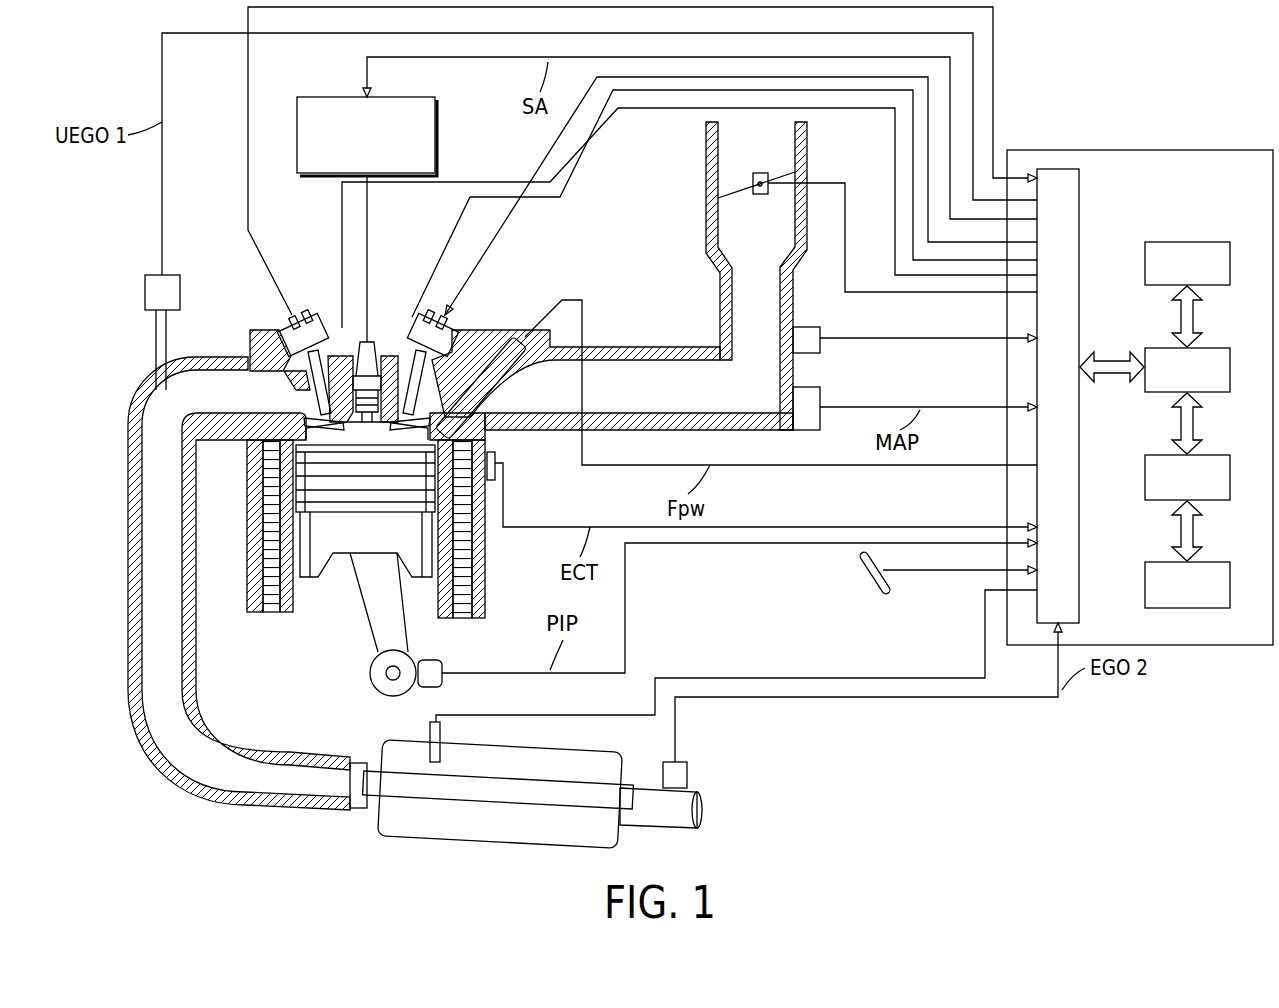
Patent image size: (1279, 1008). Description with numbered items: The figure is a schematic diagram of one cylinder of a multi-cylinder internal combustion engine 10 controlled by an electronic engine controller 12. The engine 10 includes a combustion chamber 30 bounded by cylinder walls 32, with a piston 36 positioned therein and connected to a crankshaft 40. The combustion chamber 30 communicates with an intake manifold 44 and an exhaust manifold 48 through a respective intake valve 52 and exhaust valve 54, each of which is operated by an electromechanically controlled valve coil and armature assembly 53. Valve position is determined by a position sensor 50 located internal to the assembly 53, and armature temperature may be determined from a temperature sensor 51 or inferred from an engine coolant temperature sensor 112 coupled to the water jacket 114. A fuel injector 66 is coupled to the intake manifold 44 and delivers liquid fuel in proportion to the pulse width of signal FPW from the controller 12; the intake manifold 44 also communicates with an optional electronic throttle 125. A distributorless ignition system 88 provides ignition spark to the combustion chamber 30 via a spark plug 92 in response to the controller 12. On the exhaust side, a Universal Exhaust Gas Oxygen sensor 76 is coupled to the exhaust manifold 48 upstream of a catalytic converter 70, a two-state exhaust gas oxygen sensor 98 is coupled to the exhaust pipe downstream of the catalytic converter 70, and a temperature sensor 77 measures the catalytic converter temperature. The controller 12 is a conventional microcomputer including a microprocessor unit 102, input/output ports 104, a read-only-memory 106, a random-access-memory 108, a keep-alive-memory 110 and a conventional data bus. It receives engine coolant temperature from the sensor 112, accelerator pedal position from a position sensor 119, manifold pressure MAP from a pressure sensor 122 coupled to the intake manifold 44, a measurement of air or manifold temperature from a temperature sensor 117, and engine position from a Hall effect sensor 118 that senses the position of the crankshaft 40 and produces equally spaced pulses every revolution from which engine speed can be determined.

The internal combustion engine 10 is at (246, 326).
The electronic engine controller 12 is at (1140, 150).
The combustion chamber 30 is at (350, 440).
The cylinder walls 32 is at (285, 605).
The piston 36 is at (355, 528).
The crankshaft 40 is at (368, 672).
The intake manifold 44 is at (664, 397).
The exhaust manifold 48 is at (140, 478).
The position sensor 50 is at (332, 300).
The temperature sensor 51 is at (394, 300).
The intake valve 52 is at (455, 410).
The valve coil and armature assembly 53 is at (290, 308).
The exhaust valve 54 is at (310, 410).
The fuel injector 66 is at (519, 315).
The catalytic converter 70 is at (480, 830).
The Universal Exhaust Gas Oxygen (UEGO) sensor 76 is at (158, 268).
The temperature sensor 77 is at (428, 742).
The distributorless ignition system 88 is at (437, 150).
The spark plug 92 is at (374, 312).
The two-state exhaust gas oxygen sensor 98 is at (693, 770).
The microprocessor unit 102 is at (1218, 348).
The input/output ports 104 is at (1080, 222).
The read-only-memory 106 is at (1205, 242).
The random-access-memory 108 is at (1218, 455).
The keep-alive-memory 110 is at (1218, 562).
The engine coolant temperature sensor 112 is at (497, 462).
The water jacket 114 is at (264, 606).
The temperature sensor 117 is at (830, 336).
The Hall effect sensor 118 is at (445, 667).
The position sensor 119 is at (870, 580).
The pressure sensor 122 is at (822, 395).
The electronic throttle 125 is at (756, 176).